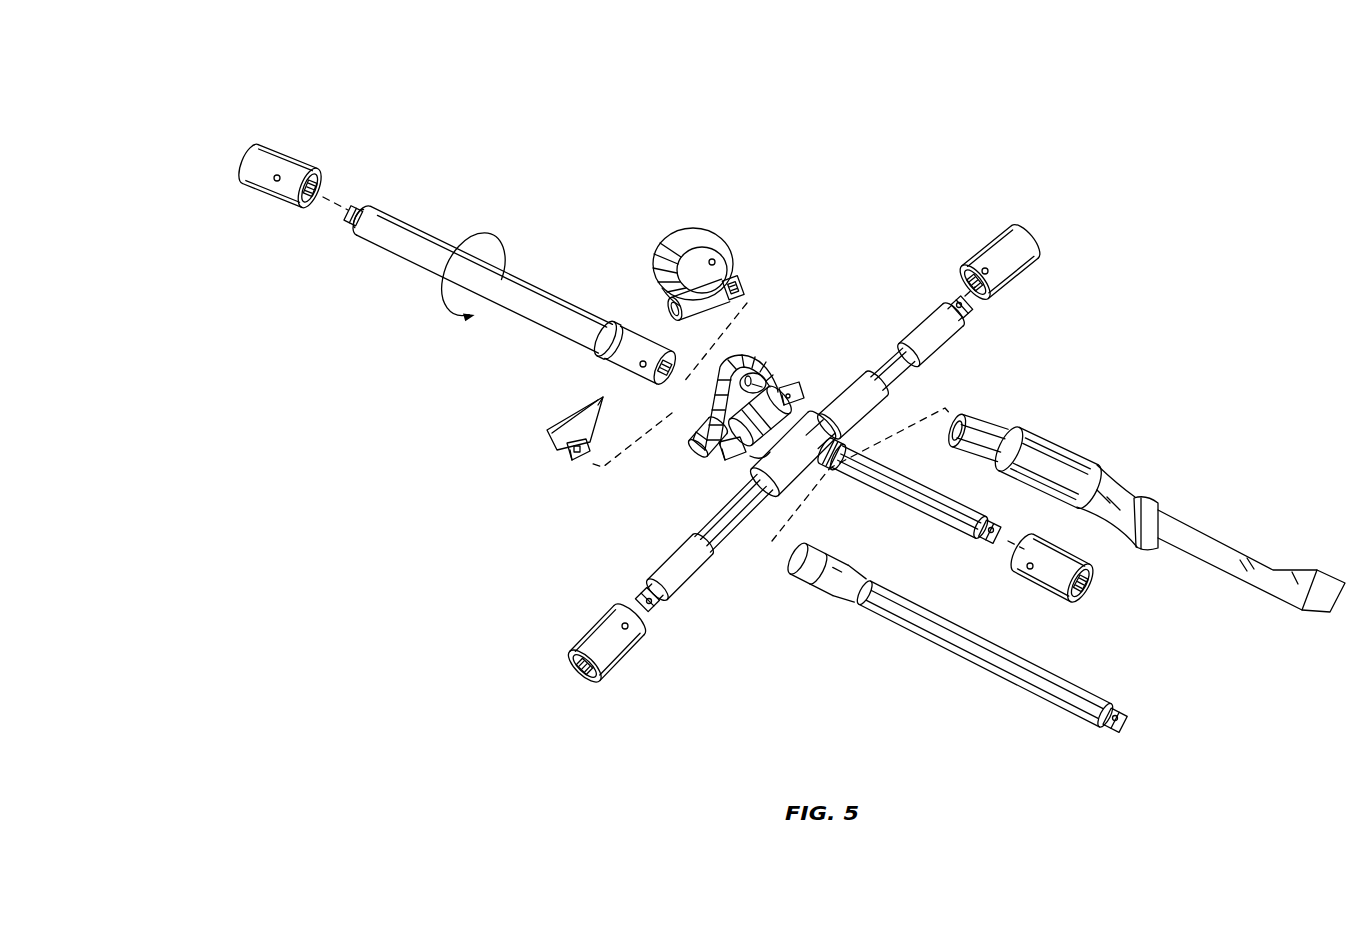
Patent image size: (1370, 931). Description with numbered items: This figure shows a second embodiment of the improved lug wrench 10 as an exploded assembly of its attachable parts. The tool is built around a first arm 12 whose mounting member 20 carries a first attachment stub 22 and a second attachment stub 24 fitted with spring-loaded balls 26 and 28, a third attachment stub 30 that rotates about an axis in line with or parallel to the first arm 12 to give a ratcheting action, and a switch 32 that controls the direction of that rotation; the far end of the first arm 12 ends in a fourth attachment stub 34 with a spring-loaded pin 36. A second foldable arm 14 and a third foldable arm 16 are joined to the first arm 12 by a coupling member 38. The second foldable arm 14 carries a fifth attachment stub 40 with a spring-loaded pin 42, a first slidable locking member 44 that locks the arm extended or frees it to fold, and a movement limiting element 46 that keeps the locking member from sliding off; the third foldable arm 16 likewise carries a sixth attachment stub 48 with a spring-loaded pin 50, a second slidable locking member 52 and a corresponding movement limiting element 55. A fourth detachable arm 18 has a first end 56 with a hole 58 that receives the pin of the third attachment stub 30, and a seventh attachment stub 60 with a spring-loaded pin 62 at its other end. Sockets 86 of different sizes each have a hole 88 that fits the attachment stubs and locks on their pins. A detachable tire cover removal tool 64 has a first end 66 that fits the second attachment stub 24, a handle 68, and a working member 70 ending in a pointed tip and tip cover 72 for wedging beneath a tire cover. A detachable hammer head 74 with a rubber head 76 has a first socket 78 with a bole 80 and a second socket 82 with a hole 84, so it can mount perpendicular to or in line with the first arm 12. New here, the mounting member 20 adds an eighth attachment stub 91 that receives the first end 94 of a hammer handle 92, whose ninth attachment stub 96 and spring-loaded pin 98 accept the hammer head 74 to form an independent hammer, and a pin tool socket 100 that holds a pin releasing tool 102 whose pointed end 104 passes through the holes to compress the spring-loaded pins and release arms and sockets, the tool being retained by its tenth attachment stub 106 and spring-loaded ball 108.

The lug wrench 10 is at (952, 137).
The first arm 12 is at (925, 516).
The second foldable arm 14 is at (740, 535).
The third foldable arm 16 is at (893, 358).
The fourth detachable arm 18 is at (423, 227).
The mounting member 20 is at (738, 352).
The first attachment stub 22 is at (745, 477).
The second attachment stub 24 is at (802, 392).
The spring-loaded ball 26 is at (740, 460).
The spring-loaded ball 28 is at (771, 378).
The third attachment stub 30 is at (713, 407).
The switch 32 is at (718, 448).
The fourth attachment stub 34 is at (1000, 551).
The spring-loaded pin 36 is at (989, 541).
The coupling member 38 is at (836, 472).
The fifth attachment stub 40 is at (653, 613).
The spring-loaded pin 42 is at (650, 589).
The first slidable locking member 44 is at (797, 487).
The movement limiting element 46 is at (697, 568).
The sixth attachment stub 48 is at (955, 298).
The spring-loaded pin 50 is at (965, 309).
The second slidable locking member 52 is at (884, 412).
The sleeve 55 is at (935, 350).
The first end 56 is at (621, 369).
The hole 58 is at (641, 360).
The seventh attachment stub 60 is at (360, 204).
The spring-loaded pin 62 is at (352, 225).
The detachable tire cover removal tool 64 is at (1154, 526).
The first end 66 is at (980, 411).
The handle 68 is at (1067, 446).
The working member 70 is at (1218, 534).
The pointed tip and tip cover 72 is at (1309, 622).
The detachable hammer head 74 is at (701, 256).
The rubber head 76 is at (700, 234).
The first socket 78 is at (666, 293).
The hole 80 is at (681, 319).
The second socket 82 is at (742, 280).
The hole 84 is at (712, 261).
The sockets 86 is at (268, 147).
The hole 88 is at (276, 183).
The eighth attachment stub 91 is at (757, 468).
The hammer handle 92 is at (976, 666).
The first end 94 is at (822, 583).
The ninth attachment stub 96 is at (1118, 716).
The spring-loaded pin 98 is at (1109, 730).
The pin tool socket 100 is at (672, 424).
The pin releasing tool 102 is at (566, 426).
The pointed end 104 is at (606, 398).
The tenth attachment stub 106 is at (572, 464).
The spring-loaded ball 108 is at (568, 457).